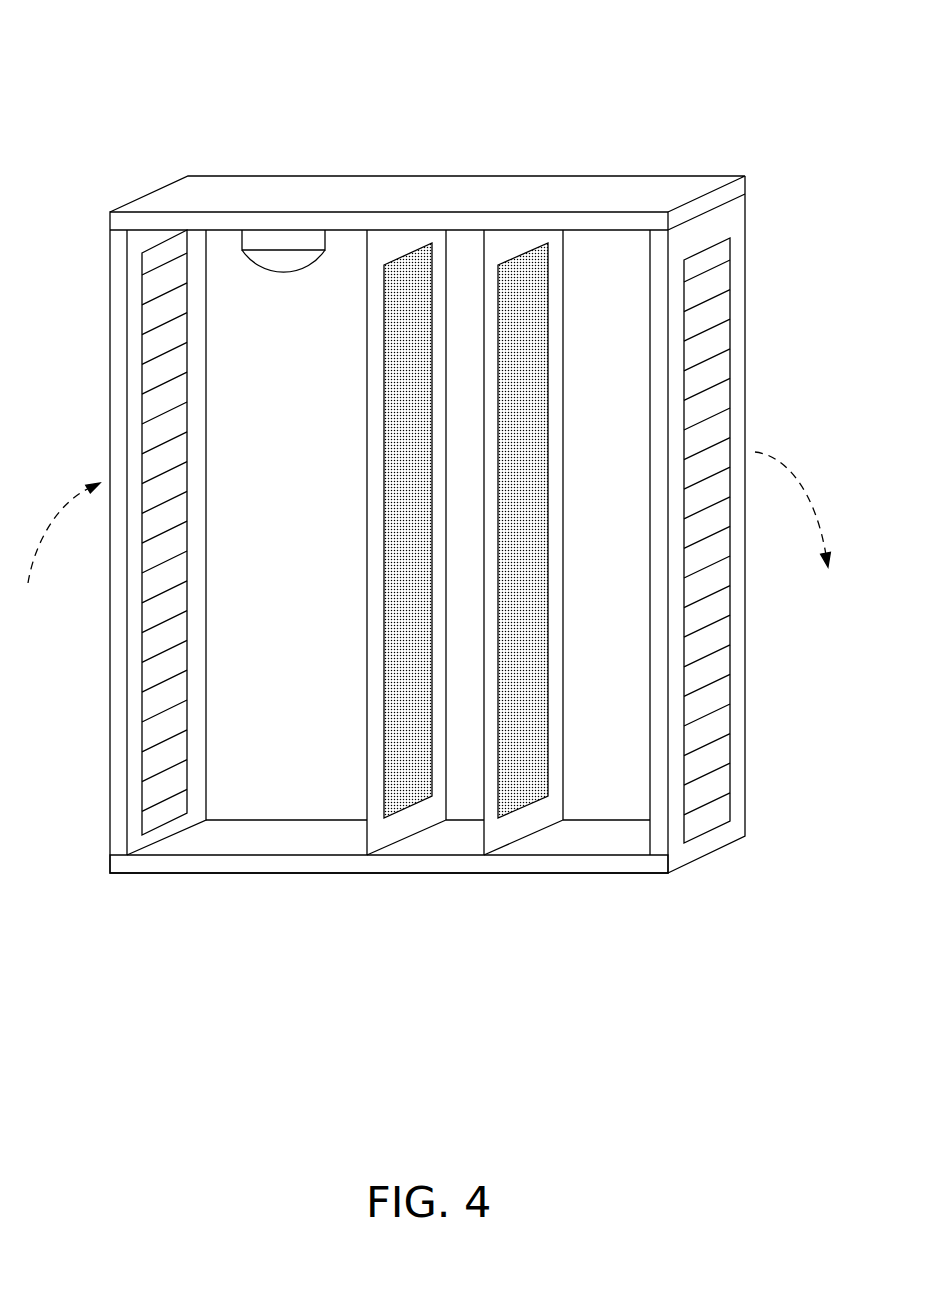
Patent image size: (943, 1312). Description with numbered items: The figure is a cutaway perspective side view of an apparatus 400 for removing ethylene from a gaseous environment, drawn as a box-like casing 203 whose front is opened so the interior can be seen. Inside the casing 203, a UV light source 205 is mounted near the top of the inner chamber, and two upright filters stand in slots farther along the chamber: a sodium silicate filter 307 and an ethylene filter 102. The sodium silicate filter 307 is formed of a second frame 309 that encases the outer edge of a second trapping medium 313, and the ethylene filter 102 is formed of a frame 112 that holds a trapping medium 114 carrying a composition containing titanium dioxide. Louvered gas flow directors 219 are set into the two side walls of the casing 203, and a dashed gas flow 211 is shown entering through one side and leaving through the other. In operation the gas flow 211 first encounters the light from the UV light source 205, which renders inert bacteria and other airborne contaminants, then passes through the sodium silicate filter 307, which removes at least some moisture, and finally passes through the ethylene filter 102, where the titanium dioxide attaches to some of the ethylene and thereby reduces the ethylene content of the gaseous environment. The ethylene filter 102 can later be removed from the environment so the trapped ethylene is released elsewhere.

The apparatus 400 is at (160, 87).
The casing 203 is at (330, 874).
The UV light source 205 is at (297, 238).
The gas flow director 219 is at (162, 748).
The second frame 309 is at (392, 243).
The sodium silicate filter 307 is at (398, 838).
The second trapping medium 313 is at (412, 302).
The ethylene filter 102 is at (483, 783).
The frame 112 is at (510, 245).
The trapping medium 114 is at (535, 293).
The gas flow 211 is at (52, 515).